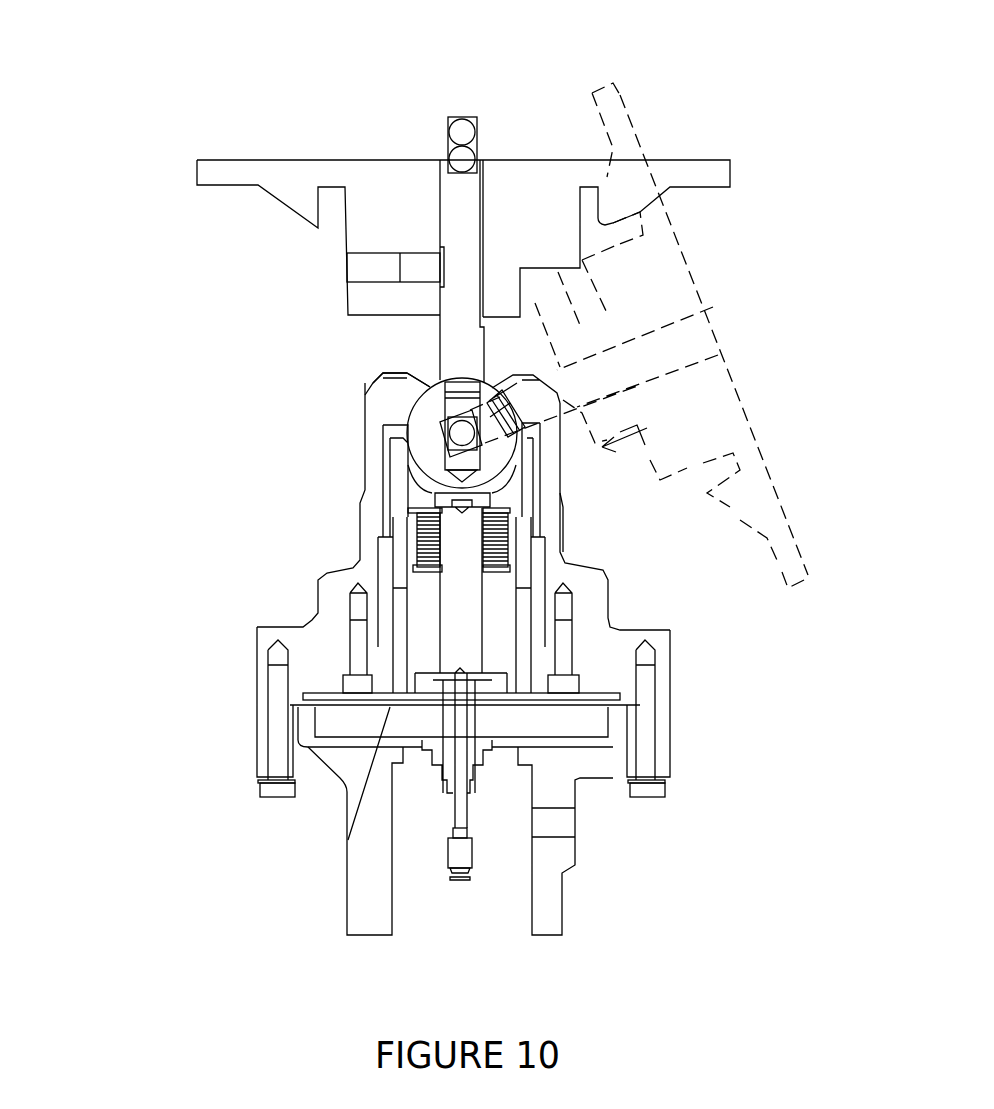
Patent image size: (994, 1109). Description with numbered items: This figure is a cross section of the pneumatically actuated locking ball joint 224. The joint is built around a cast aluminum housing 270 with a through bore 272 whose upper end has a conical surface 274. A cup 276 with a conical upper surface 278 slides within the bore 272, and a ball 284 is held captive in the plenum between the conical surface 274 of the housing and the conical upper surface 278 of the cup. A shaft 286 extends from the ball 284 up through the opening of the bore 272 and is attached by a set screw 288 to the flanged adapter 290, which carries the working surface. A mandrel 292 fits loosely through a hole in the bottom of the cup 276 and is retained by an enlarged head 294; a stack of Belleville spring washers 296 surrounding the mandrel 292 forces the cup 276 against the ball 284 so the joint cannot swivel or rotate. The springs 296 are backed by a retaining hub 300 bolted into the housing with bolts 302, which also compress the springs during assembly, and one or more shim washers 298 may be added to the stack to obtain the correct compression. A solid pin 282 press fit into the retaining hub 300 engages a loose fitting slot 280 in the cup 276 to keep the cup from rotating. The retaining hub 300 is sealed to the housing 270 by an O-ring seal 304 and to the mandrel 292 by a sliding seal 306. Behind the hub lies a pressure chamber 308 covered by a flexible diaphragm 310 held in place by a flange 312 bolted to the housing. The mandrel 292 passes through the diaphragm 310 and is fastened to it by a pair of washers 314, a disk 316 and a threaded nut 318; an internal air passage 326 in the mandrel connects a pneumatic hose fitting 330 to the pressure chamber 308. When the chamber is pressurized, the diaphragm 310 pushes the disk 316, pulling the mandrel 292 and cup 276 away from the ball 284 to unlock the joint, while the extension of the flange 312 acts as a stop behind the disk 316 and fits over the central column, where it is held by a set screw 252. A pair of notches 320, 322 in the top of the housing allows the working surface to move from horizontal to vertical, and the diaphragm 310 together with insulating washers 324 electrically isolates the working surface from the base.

The pneumatically actuated locking ball joint 224 is at (184, 447).
The set screw 252 is at (593, 768).
The housing 270 is at (657, 460).
The through bore 272 is at (428, 370).
The conical surface 274 is at (407, 403).
The cup 276 is at (380, 485).
The conical upper surface 278 is at (383, 477).
The slot 280 is at (393, 513).
The solid pin 282 is at (393, 557).
The ball 284 is at (428, 380).
The shaft 286 is at (467, 230).
The set screw 288 is at (358, 253).
The flanged adapter 290 is at (513, 160).
The mandrel 292 is at (488, 606).
The enlarged head 294 is at (508, 522).
The Belleville spring washers 296 is at (687, 500).
The shim washers 298 is at (507, 563).
The retaining hub 300 is at (560, 561).
The bolts 302 is at (347, 628).
The O-ring seal 304 is at (327, 640).
The sliding seal 306 is at (588, 660).
The pressure chamber 308 is at (347, 695).
The flexible diaphragm 310 is at (347, 790).
The flange 312 is at (580, 823).
The washers 314 is at (493, 705).
The disk 316 is at (605, 742).
The threaded nut 318 is at (480, 767).
The notch 320 is at (397, 380).
The notch 322 is at (540, 400).
The insulating washers 324 is at (258, 785).
The internal air passage 326 is at (455, 810).
The pneumatic hose fitting 330 is at (467, 853).